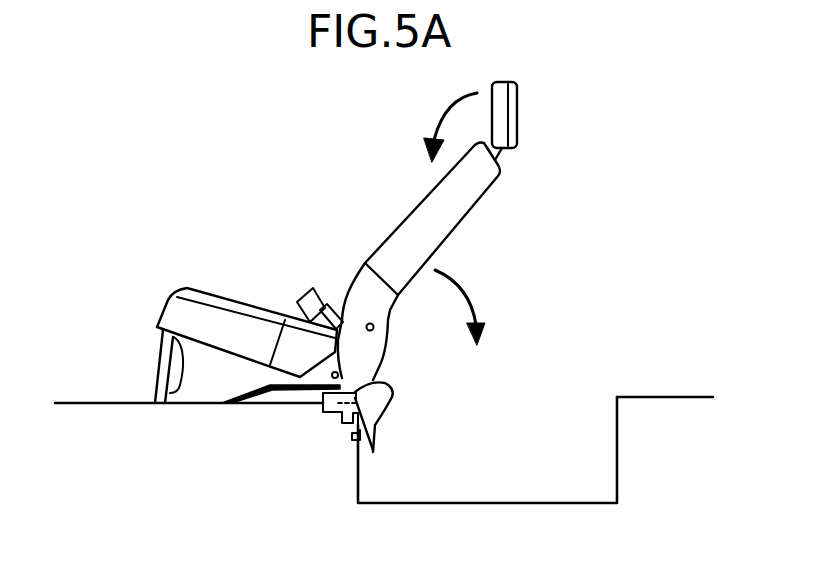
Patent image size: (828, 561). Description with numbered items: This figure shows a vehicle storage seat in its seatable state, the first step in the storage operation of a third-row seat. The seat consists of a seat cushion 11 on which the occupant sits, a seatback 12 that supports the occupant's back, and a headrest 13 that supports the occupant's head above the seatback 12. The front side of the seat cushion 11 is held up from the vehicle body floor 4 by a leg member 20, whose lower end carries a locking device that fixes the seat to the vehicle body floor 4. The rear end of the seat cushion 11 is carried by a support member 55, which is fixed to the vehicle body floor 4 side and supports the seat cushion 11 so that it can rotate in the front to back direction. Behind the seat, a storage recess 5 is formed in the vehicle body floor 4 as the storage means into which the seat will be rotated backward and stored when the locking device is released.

The vehicle body floor 4 is at (665, 397).
The storage recess 5 is at (570, 470).
The seat cushion 11 is at (230, 298).
The seatback 12 is at (448, 220).
The headrest 13 is at (510, 113).
The leg member 20 is at (160, 357).
The support member 55 is at (390, 387).